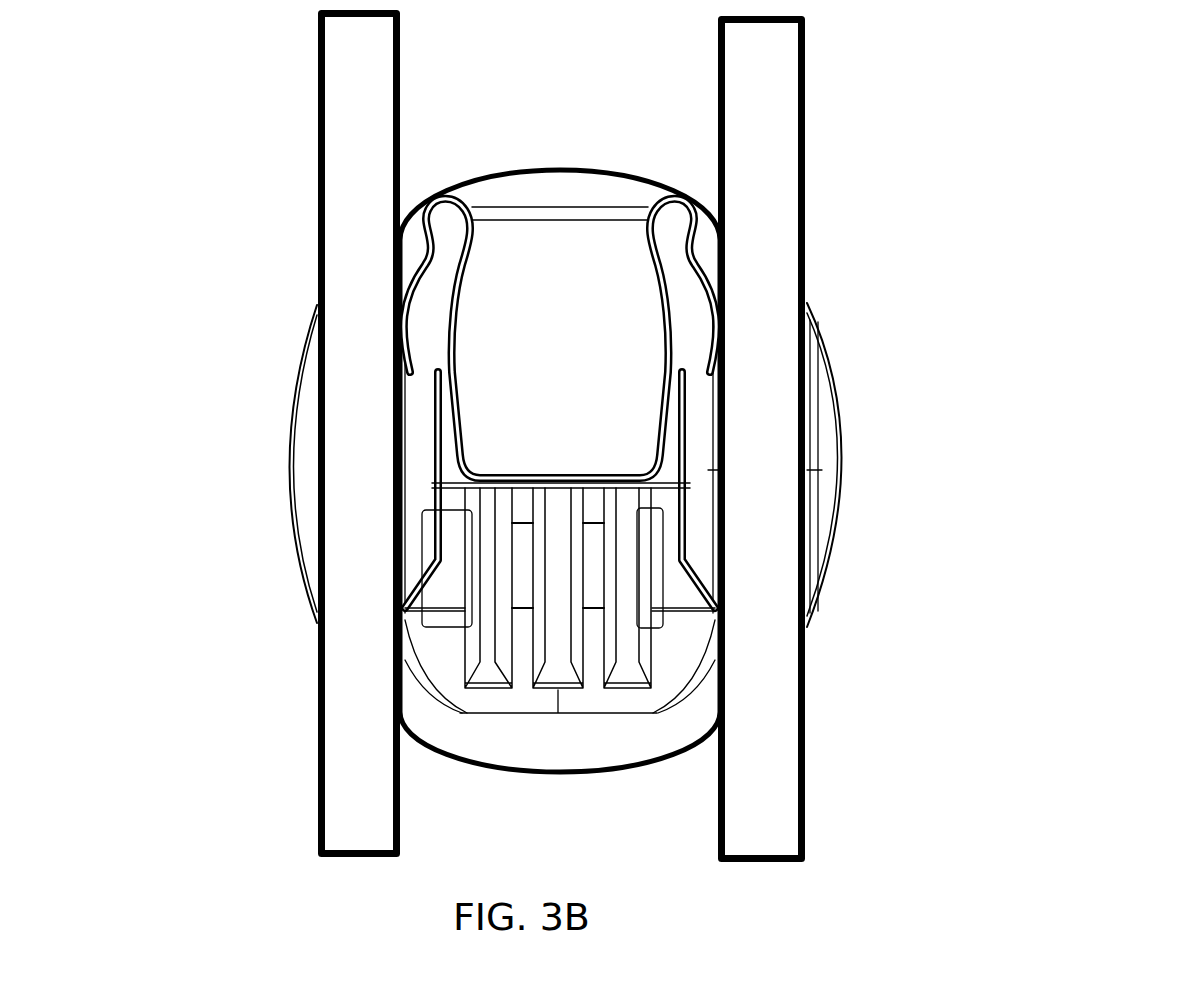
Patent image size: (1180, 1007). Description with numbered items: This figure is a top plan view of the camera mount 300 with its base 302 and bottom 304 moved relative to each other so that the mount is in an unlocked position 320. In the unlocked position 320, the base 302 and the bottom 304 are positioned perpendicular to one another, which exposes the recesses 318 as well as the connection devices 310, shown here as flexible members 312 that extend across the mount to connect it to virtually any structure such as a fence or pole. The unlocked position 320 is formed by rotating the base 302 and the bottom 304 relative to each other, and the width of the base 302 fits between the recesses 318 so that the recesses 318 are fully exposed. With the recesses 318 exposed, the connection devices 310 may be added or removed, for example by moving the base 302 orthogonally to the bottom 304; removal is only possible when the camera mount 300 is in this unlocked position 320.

The camera mount 300 is at (603, 436).
The base 302 is at (537, 195).
The bottom 304 is at (303, 398).
The connection devices 310 is at (551, 436).
The flexible members 312 is at (343, 143).
The recesses 318 is at (303, 658).
The unlocked position 320 is at (968, 747).